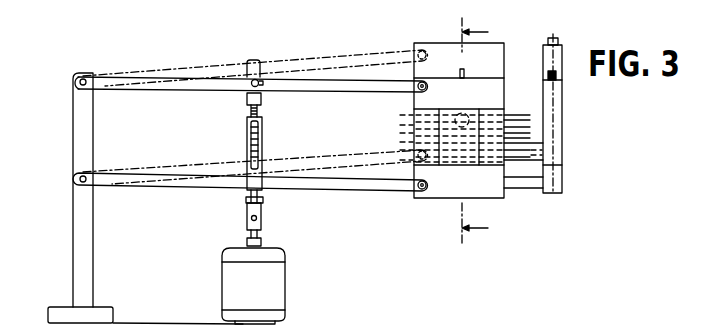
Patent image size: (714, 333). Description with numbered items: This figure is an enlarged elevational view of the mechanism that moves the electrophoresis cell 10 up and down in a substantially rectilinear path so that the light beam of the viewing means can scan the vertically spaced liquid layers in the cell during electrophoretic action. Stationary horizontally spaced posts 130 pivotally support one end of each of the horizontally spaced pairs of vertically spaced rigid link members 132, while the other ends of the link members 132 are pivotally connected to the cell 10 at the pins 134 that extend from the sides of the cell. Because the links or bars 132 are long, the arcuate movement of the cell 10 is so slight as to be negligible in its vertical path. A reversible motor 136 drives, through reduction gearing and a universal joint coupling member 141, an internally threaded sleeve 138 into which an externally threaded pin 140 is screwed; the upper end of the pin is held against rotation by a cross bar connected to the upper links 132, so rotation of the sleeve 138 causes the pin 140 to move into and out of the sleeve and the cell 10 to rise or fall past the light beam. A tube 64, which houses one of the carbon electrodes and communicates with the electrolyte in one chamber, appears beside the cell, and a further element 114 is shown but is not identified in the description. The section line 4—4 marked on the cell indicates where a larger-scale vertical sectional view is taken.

The electrophoresis cell 10 is at (488, 198).
The tube 64 is at (563, 126).
The hydraulic fluid 114 is at (452, 123).
The posts 130 is at (79, 129).
The link members 132 is at (117, 77).
The pins 134 is at (418, 100).
The reversible motor 136 is at (282, 285).
The internally threaded sleeve 138 is at (247, 137).
The externally threaded pin 140 is at (262, 110).
The universal joint coupling member 141 is at (246, 214).
The section line 4— 4 is at (475, 133).